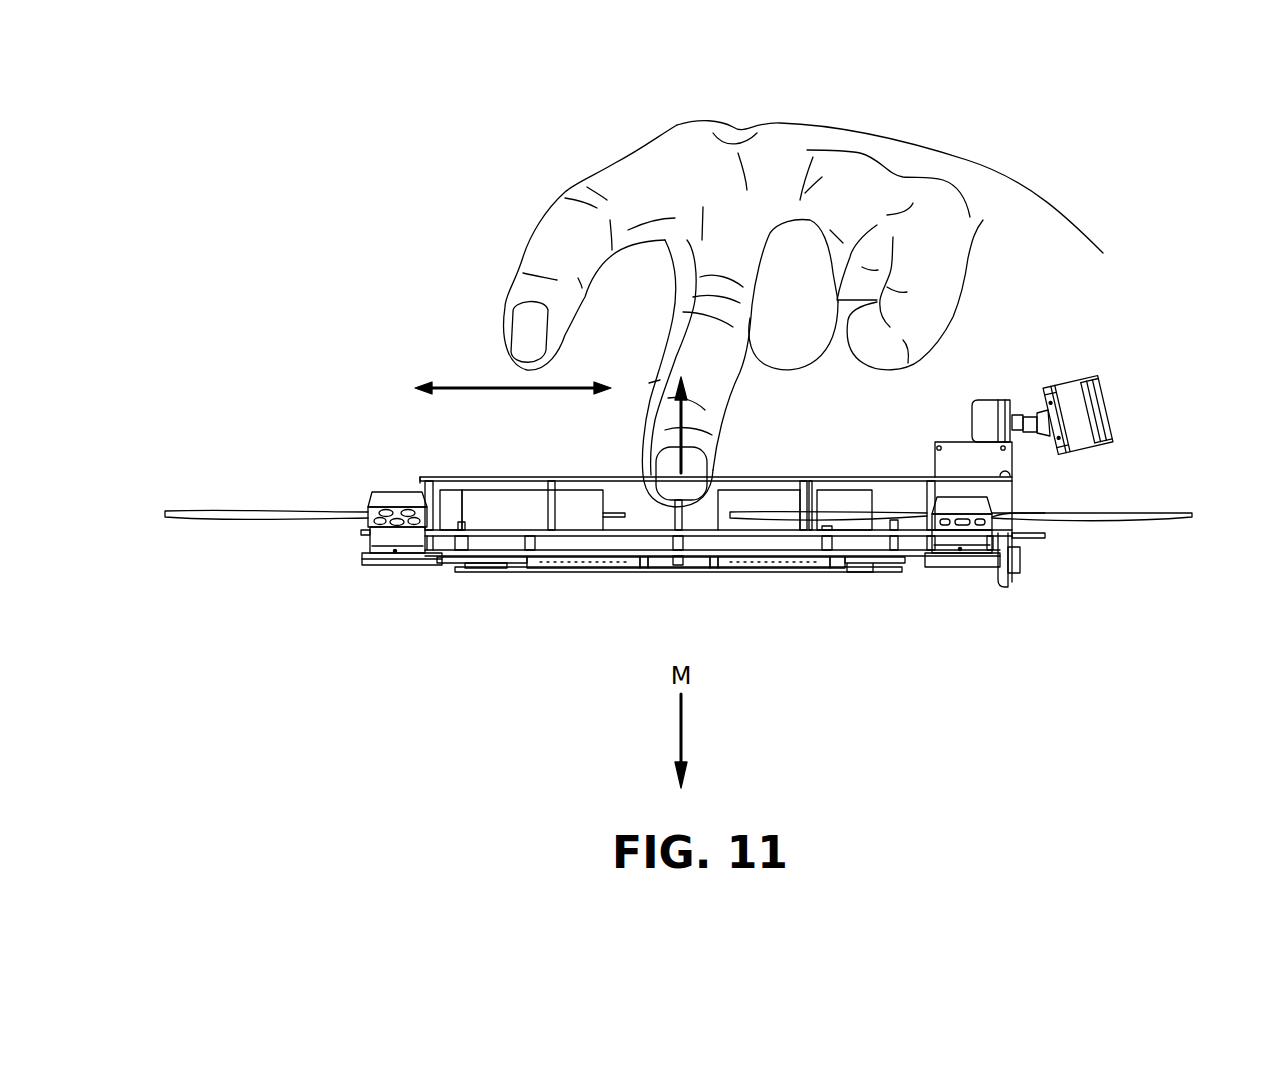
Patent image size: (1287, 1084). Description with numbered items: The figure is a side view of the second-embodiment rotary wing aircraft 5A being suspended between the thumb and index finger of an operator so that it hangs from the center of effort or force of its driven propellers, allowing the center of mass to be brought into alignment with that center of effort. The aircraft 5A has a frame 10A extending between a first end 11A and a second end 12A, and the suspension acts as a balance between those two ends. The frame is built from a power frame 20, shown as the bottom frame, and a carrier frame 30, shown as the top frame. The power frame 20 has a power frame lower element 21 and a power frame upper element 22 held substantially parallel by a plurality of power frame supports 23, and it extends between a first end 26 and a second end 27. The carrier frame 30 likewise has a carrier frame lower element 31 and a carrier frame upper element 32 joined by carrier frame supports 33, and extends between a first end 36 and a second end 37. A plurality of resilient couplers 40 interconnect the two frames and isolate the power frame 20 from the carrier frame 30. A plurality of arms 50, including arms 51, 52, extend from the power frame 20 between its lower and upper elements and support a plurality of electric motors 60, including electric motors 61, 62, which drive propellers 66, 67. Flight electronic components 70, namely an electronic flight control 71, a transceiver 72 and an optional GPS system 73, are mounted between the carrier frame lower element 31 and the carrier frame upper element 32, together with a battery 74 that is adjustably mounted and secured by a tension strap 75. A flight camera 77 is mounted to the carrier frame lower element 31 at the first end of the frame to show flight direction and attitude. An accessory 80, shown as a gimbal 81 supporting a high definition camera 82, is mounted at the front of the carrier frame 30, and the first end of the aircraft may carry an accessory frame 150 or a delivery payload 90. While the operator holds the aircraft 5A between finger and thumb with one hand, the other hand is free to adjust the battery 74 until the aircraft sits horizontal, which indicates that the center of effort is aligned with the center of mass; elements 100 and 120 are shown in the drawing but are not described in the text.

The rotary wing aircraft 5A is at (348, 340).
The frame 10A is at (467, 477).
The first end 11A is at (1053, 536).
The second end 12A is at (420, 480).
The power frame 20 is at (537, 571).
The power frame lower element 21 is at (582, 571).
The power frame upper element 22 is at (762, 556).
The power frame supports 23 is at (642, 560).
The first end 26 is at (900, 577).
The second end 27 is at (455, 570).
The carrier frame 30 is at (623, 478).
The carrier frame lower element 31 is at (498, 530).
The carrier frame upper element 32 is at (897, 477).
The carrier frame supports 33 is at (558, 483).
The first end 36 is at (1030, 539).
The second end 37 is at (422, 477).
The resilient couplers 40 is at (458, 542).
The plurality of arms 50 is at (1040, 655).
The arm 51 is at (943, 558).
The arm 52 is at (365, 563).
The plurality of electric motors 60 is at (1120, 600).
The electric motor 61 is at (965, 533).
The electric motor 62 is at (368, 536).
The propeller 66 is at (1163, 511).
The propeller 67 is at (217, 513).
The flight electronic components 70 is at (828, 405).
The electronic flight control 71 is at (727, 500).
The transceiver 72 is at (770, 497).
The GPS system 73 is at (852, 493).
The battery 74 is at (375, 492).
The tension strap 75 is at (447, 513).
The flight camera 77 is at (1012, 572).
The accessory 80 is at (1152, 350).
The gimbal 81 is at (943, 330).
The high definition camera 82 is at (1062, 383).
The delivery payload 90 is at (1168, 419).
The circuit board 100 is at (797, 563).
The connector 120 is at (557, 562).
The accessory frame 150 is at (1165, 378).